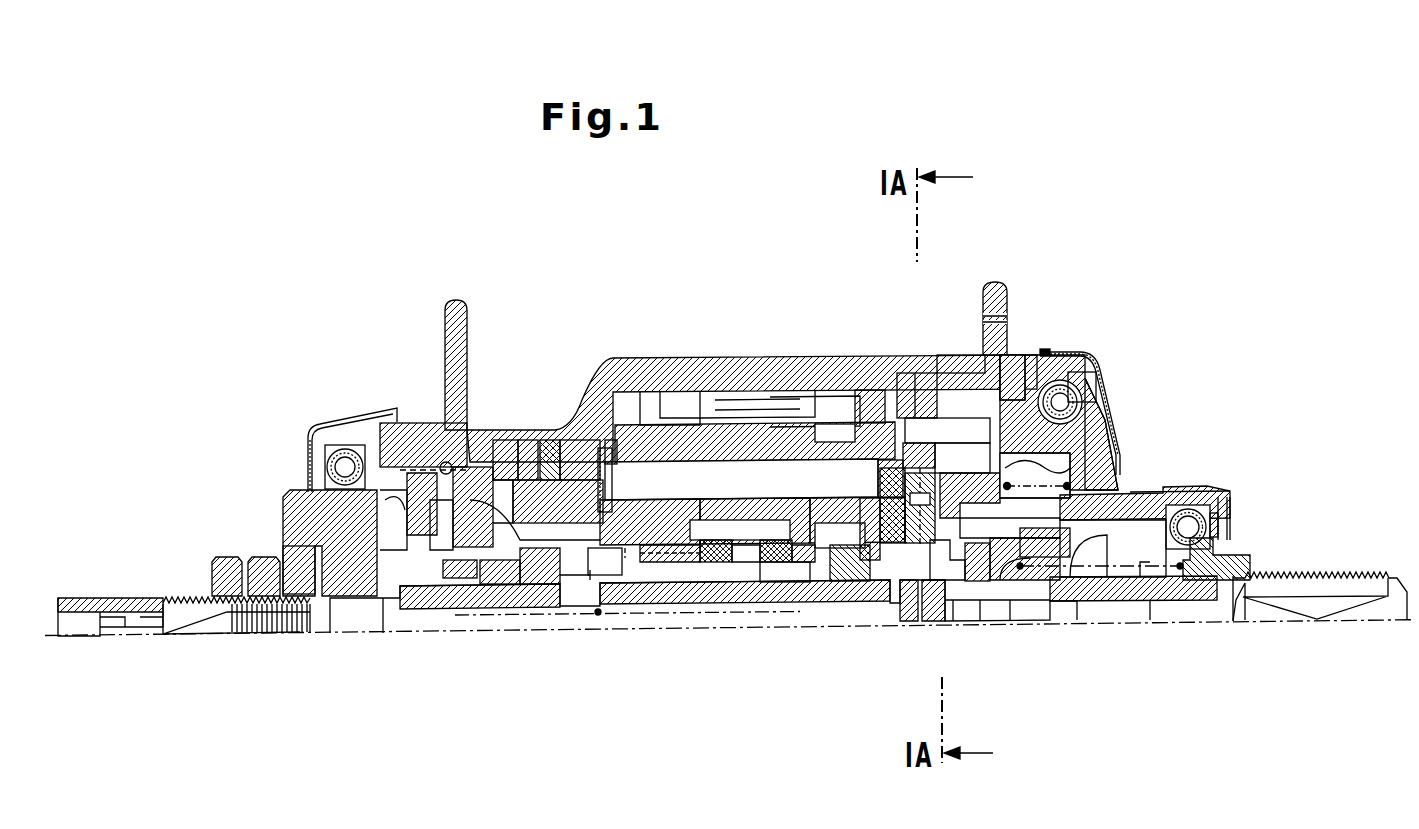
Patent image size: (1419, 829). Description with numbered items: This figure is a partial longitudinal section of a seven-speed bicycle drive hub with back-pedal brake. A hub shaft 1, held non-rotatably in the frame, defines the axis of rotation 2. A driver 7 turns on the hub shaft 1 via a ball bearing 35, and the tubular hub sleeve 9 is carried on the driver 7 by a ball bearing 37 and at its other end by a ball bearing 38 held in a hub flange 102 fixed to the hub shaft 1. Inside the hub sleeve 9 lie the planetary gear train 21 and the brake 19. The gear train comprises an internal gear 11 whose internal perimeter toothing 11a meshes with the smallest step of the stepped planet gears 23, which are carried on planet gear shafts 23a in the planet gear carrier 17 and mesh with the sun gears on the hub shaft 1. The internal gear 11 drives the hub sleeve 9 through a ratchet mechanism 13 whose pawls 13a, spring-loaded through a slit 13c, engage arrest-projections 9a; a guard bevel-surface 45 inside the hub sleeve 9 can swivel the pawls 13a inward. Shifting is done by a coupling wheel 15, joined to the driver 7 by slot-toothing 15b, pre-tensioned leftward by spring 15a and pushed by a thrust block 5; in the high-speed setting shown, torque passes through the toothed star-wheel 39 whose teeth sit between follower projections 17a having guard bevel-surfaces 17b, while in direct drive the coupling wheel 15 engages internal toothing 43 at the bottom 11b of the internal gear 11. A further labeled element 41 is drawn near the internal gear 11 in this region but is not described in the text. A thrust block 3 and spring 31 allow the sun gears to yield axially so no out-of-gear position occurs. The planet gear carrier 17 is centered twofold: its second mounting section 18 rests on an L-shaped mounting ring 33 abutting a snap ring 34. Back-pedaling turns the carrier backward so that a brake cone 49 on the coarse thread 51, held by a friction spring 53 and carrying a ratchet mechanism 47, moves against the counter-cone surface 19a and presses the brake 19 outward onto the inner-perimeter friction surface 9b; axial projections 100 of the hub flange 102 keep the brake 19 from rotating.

The hub shaft 1 is at (447, 617).
The axis of rotation 2 is at (330, 636).
The thrust block 3 is at (793, 572).
The thrust block 5 is at (937, 620).
The driver 7 is at (1093, 495).
The hub sleeve 9 is at (778, 372).
The arrest-projections 9a is at (866, 430).
The inner-perimeter friction surface 9b is at (478, 470).
The internal gear 11 is at (1065, 440).
The internal perimeter toothing 11a is at (858, 440).
The bottom 11b is at (1045, 470).
The ratchet mechanism 13 is at (1033, 372).
The pawls 13a is at (1008, 392).
The slit 13c is at (940, 427).
The coupling wheel 15 is at (1003, 567).
The pre-tensioning spring 15a is at (1141, 623).
The slot-toothing 15b is at (1100, 545).
The planet gear carrier 17 is at (552, 572).
The follower projections / first mounting section 17a is at (452, 567).
The guard bevel-surfaces 17b is at (1063, 400).
The second mounting section 18 is at (895, 592).
The brake 19 is at (390, 520).
The counter-cone surface 19a is at (490, 572).
The planetary gear train 21 is at (620, 473).
The planet gears 23 is at (675, 400).
The planet gear shafts 23a is at (603, 462).
The spring 31 is at (598, 614).
The mounting ring 33 is at (868, 592).
The snap ring 34 is at (880, 598).
The ball bearing 35 is at (1193, 527).
The ball bearing 37 is at (1083, 390).
The ball bearing 38 is at (330, 462).
The toothed star-wheel 39 is at (976, 585).
The bolt axis 41 is at (1060, 455).
The internal toothing 43 is at (1026, 550).
The guard bevel-surface 45 is at (975, 355).
The ratchet mechanism 47 is at (553, 500).
The brake cone 49 is at (537, 465).
The coarse thread 51 is at (447, 560).
The friction spring 53 is at (452, 420).
The axial projections 100 is at (390, 517).
The hub flange 102 is at (287, 507).